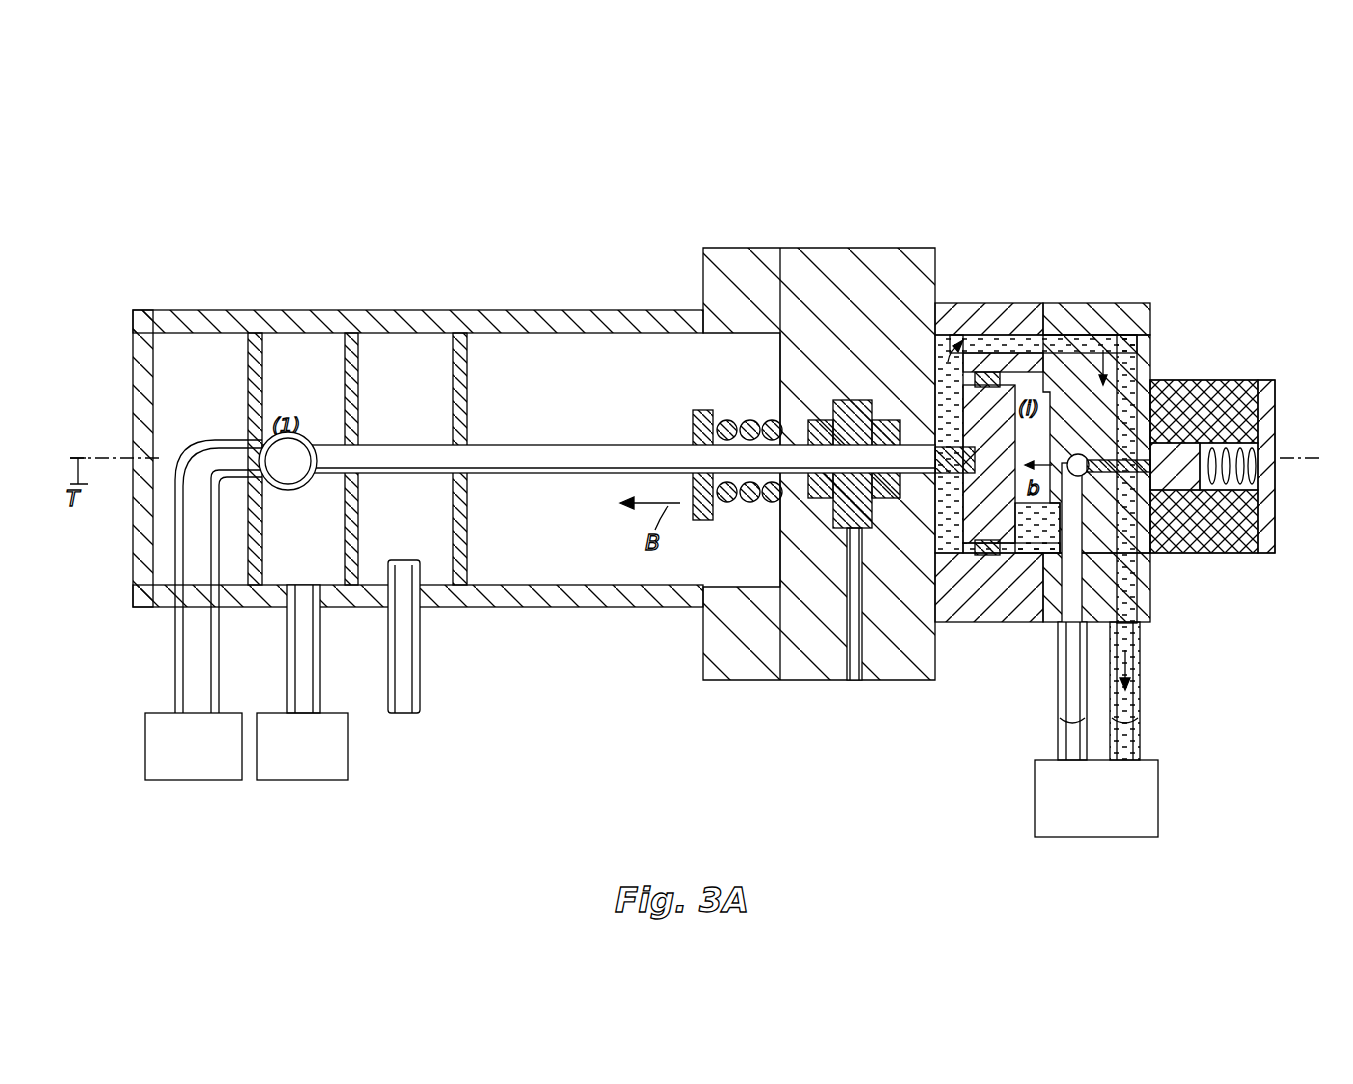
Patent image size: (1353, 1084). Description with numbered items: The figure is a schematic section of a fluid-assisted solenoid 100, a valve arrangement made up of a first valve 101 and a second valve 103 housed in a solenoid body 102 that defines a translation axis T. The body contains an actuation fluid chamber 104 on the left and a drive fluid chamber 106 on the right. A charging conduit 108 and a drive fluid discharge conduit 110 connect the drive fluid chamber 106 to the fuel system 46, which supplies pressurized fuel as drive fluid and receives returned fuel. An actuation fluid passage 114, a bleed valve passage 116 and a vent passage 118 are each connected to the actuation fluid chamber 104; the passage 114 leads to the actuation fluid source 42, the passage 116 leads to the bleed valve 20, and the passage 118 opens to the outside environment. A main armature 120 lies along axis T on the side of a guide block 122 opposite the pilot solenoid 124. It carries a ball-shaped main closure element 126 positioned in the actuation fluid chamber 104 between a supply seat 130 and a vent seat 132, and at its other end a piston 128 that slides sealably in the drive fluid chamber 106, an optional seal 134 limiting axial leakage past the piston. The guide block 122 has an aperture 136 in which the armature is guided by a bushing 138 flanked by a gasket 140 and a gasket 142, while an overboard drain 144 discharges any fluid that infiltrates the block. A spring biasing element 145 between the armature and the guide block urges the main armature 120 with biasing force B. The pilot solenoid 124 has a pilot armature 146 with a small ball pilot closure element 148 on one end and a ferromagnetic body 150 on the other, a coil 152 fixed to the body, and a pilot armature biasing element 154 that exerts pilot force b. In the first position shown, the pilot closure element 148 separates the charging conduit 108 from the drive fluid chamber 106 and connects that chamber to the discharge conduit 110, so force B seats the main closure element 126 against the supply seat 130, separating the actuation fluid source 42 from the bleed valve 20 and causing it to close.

The fluid-assisted solenoid 100 is at (275, 181).
The first valve 101 is at (1071, 292).
The solenoid body 102 is at (395, 310).
The second valve 103 is at (295, 298).
The actuation fluid chamber 104 is at (316, 563).
The drive fluid chamber 106 is at (945, 500).
The charging conduit 108 is at (1058, 600).
The drive fluid discharge conduit 110 is at (1140, 590).
The actuation fluid passage 114 is at (175, 680).
The bleed valve passage 116 is at (287, 680).
The vent passage 118 is at (393, 683).
The main armature 120 is at (523, 445).
The guide block 122 is at (848, 253).
The pilot solenoid 124 is at (1246, 456).
The main closure element 126 is at (290, 475).
The piston 128 is at (925, 503).
The supply seat 130 is at (270, 405).
The vent seat 132 is at (338, 418).
The seal 134 is at (958, 545).
The aperture 136 is at (782, 530).
The bushing 138 is at (855, 400).
The gasket 140 is at (815, 420).
The gasket 142 is at (893, 420).
The overboard drain 144 is at (850, 590).
The biasing element 145 is at (740, 412).
The pilot armature 146 is at (1130, 450).
The pilot closure element 148 is at (1077, 453).
The ferromagnetic body 150 is at (1190, 382).
The coil 152 is at (1215, 556).
The pilot armature biasing element 154 is at (1258, 460).
The actuation fluid source 42 is at (202, 761).
The bleed valve 20 is at (314, 761).
The fuel system 46 is at (1090, 840).